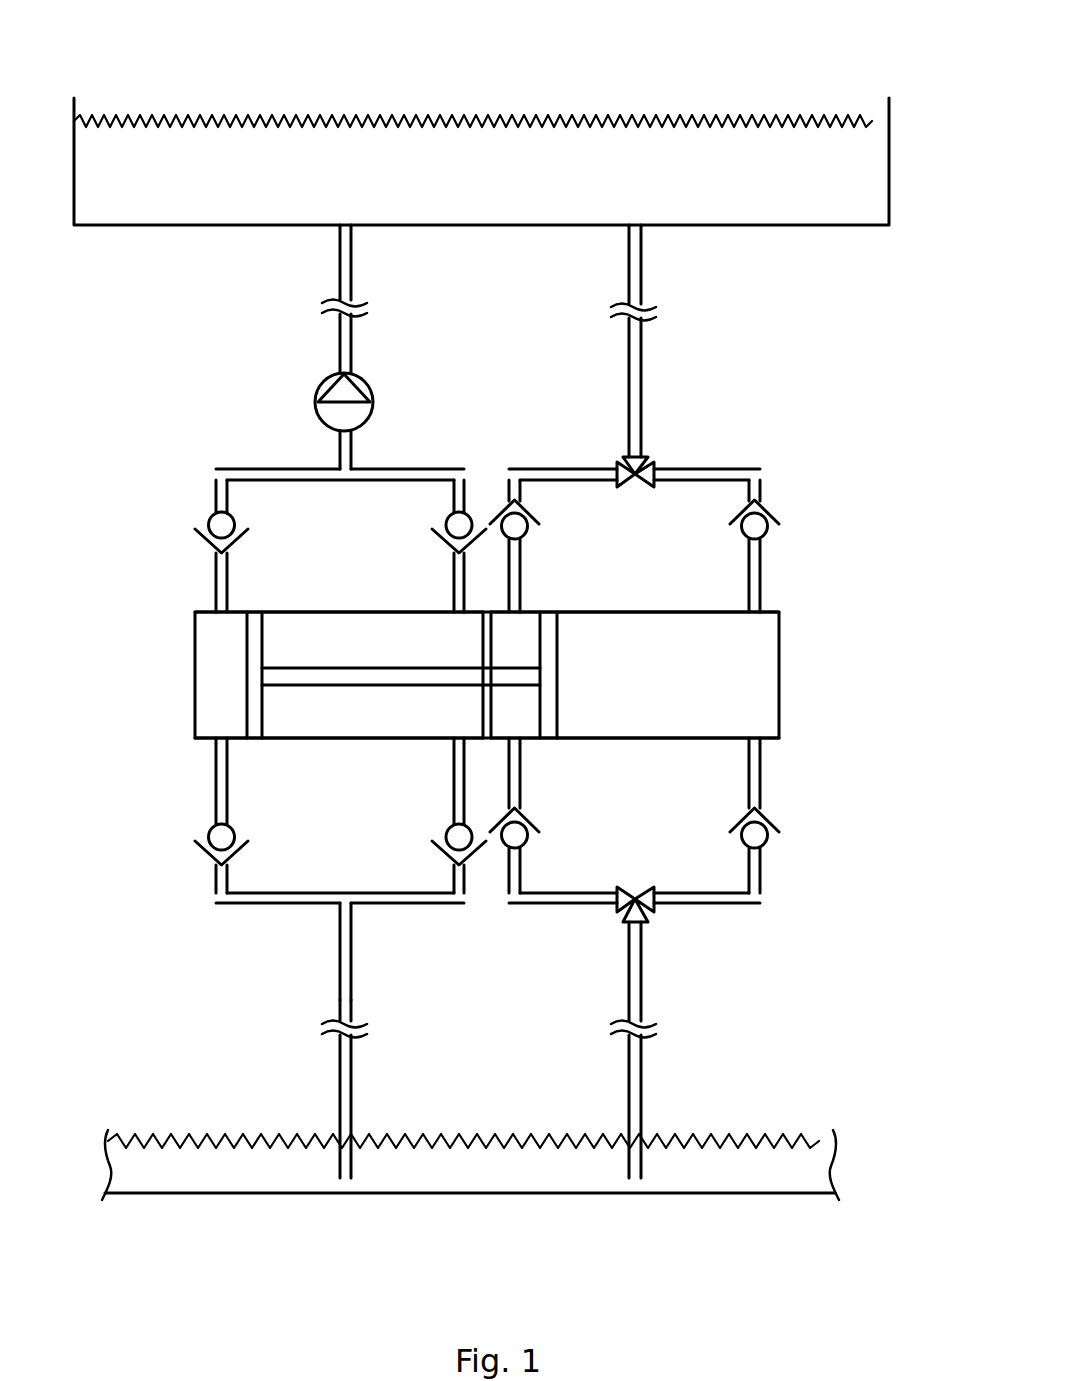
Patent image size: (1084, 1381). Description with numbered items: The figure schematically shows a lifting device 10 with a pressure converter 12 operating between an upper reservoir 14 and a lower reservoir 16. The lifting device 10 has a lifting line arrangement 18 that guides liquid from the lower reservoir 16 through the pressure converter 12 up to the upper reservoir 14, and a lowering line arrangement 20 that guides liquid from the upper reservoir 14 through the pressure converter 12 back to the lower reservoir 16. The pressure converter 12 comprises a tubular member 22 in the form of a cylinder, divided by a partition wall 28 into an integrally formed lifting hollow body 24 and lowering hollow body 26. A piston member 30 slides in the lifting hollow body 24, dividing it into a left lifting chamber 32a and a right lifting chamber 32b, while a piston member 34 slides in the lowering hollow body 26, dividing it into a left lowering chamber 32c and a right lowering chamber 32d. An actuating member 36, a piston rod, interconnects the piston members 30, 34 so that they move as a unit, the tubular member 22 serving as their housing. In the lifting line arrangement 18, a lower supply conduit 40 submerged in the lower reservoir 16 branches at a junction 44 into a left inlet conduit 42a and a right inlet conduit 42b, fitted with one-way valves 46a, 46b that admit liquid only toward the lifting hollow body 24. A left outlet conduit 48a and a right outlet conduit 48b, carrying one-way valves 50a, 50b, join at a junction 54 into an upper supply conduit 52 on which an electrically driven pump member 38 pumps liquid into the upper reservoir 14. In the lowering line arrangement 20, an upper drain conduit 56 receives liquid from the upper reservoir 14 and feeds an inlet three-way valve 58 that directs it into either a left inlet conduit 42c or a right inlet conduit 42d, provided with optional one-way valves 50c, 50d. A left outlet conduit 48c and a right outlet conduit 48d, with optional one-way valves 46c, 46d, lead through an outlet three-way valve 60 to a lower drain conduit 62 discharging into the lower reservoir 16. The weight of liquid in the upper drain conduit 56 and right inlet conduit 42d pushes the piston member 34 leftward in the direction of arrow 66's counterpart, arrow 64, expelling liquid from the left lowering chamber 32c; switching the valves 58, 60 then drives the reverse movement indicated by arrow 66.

The lifting device 10 is at (104, 57).
The pressure converter 12 is at (111, 622).
The upper reservoir 14 is at (481, 161).
The lower reservoir 16 is at (470, 1165).
The lifting line arrangement 18 is at (122, 437).
The lowering line arrangement 20 is at (853, 438).
The tubular member 22 is at (781, 679).
The lifting hollow body 24 is at (342, 612).
The lowering hollow body 26 is at (698, 612).
The partition wall 28 is at (486, 650).
The piston member 30 is at (250, 641).
The left lifting chamber 32a is at (222, 675).
The right lifting chamber 32b is at (372, 675).
The left lowering chamber 32c is at (516, 675).
The right lowering chamber 32d is at (668, 675).
The piston member 34 is at (548, 642).
The actuating member 36 is at (382, 682).
The pump member 38 is at (316, 391).
The lower supply conduit 40 is at (352, 1085).
The left inlet conduit 42a is at (215, 762).
The right inlet conduit 42b is at (452, 767).
The left inlet conduit 42c is at (522, 576).
The right inlet conduit 42d is at (765, 572).
The junction 44 is at (345, 902).
The one-way valve 46a is at (206, 851).
The one-way valve 46b is at (444, 854).
The one-way valve 46c is at (528, 816).
The one-way valve 46d is at (767, 815).
The left outlet conduit 48a is at (228, 575).
The right outlet conduit 48b is at (457, 567).
The left outlet conduit 48c is at (521, 766).
The right outlet conduit 48d is at (760, 768).
The one-way valve 50a is at (206, 541).
The one-way valve 50b is at (444, 516).
The one-way valve 50c is at (532, 509).
The one-way valve 50d is at (770, 507).
The upper supply conduit 52 is at (352, 262).
The junction 54 is at (341, 468).
The upper drain conduit 56 is at (641, 262).
The inlet three-way valve 58 is at (651, 459).
The outlet three-way valve 60 is at (640, 887).
The lower drain conduit 62 is at (641, 1085).
The arrow 64 is at (175, 677).
The arrow 66 is at (868, 677).